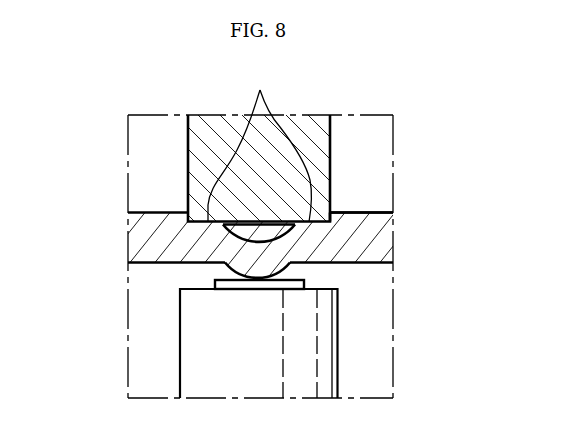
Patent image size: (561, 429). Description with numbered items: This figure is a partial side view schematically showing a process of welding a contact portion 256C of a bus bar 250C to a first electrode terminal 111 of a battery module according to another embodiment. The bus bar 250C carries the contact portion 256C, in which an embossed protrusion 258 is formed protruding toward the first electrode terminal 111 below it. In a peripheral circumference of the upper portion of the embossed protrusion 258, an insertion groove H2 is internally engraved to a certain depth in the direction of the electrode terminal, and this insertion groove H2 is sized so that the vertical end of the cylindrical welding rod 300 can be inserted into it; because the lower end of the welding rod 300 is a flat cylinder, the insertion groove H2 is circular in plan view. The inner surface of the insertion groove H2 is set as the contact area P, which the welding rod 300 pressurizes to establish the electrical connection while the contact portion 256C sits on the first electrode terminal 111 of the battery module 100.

The welding rod 300 is at (188, 132).
The contact area P is at (260, 145).
The bus bar 250C is at (149, 202).
The contact portion 256C is at (370, 212).
The insertion groove H2 is at (332, 222).
The embossed protrusion 258 is at (260, 279).
The first electrode terminal 111 is at (215, 280).
The lower die 100 is at (179, 345).